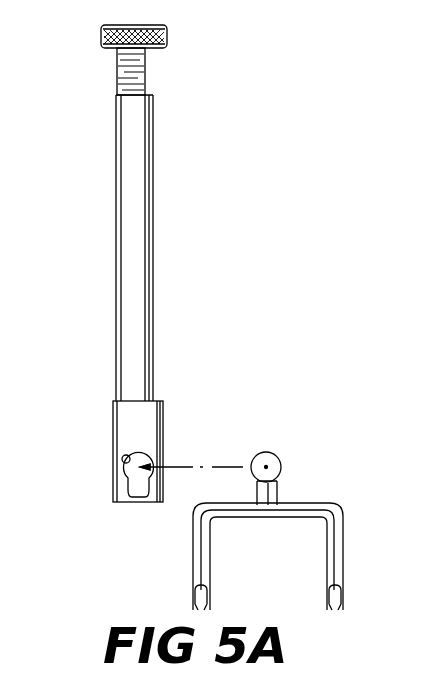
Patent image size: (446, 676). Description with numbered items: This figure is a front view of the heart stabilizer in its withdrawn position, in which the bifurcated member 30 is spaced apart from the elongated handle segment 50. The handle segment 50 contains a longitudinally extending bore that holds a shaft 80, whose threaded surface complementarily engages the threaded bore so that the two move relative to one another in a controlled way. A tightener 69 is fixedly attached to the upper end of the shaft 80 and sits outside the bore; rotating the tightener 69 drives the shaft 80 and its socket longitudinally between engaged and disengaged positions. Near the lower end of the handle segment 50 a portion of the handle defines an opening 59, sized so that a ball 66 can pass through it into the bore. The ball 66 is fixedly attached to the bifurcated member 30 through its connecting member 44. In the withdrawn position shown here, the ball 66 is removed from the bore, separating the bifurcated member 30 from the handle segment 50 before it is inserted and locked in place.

The tightener 69 is at (101, 38).
The shaft 80 is at (146, 70).
The handle segment 50 is at (116, 268).
The opening 59 is at (124, 462).
The ball 66 is at (273, 456).
The connecting member 44 is at (275, 496).
The bifurcated member 30 is at (336, 566).